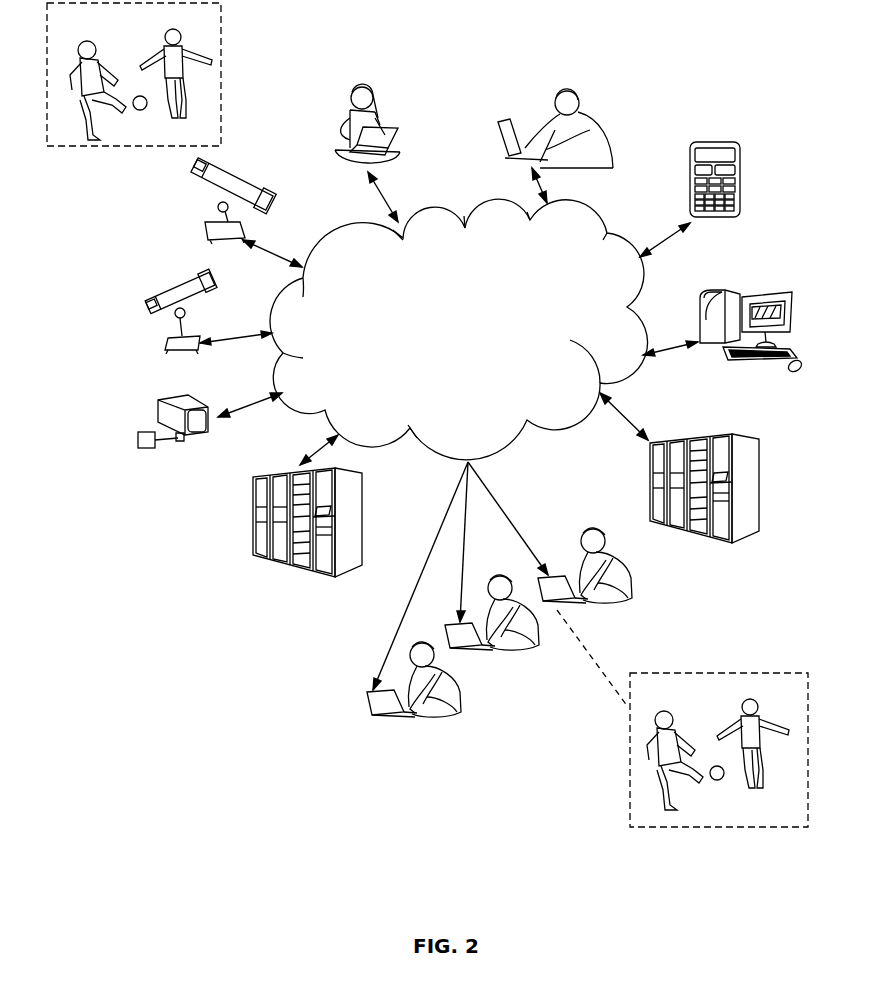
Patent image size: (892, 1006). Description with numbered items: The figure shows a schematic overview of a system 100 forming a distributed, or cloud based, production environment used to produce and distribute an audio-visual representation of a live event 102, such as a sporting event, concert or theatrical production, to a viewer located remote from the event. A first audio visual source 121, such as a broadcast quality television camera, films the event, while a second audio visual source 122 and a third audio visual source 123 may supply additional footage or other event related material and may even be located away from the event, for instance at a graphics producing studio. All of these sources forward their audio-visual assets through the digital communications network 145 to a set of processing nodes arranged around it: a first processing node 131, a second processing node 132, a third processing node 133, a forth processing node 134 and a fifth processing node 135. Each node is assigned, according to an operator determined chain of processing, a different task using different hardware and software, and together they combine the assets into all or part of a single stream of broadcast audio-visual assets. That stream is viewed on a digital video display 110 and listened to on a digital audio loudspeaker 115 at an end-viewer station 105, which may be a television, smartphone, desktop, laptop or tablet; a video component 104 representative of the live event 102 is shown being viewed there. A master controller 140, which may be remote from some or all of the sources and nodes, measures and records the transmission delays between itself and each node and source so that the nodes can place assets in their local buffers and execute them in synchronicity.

The system 100 is at (362, 858).
The live event 102 is at (134, 74).
The video component 104 is at (719, 750).
The end-viewer station 105 is at (413, 718).
The digital video display 110 is at (365, 690).
The digital audio loudspeaker 115 is at (367, 702).
The first audio visual source 121 is at (215, 205).
The second audio visual source 122 is at (153, 302).
The third audio visual source 123 is at (128, 447).
The first processing node 131 is at (338, 120).
The second processing node 132 is at (513, 120).
The third processing node 133 is at (735, 142).
The forth processing node 134 is at (733, 290).
The fifth processing node 135 is at (702, 533).
The master controller 140 is at (253, 532).
The digital communications network 145 is at (459, 329).